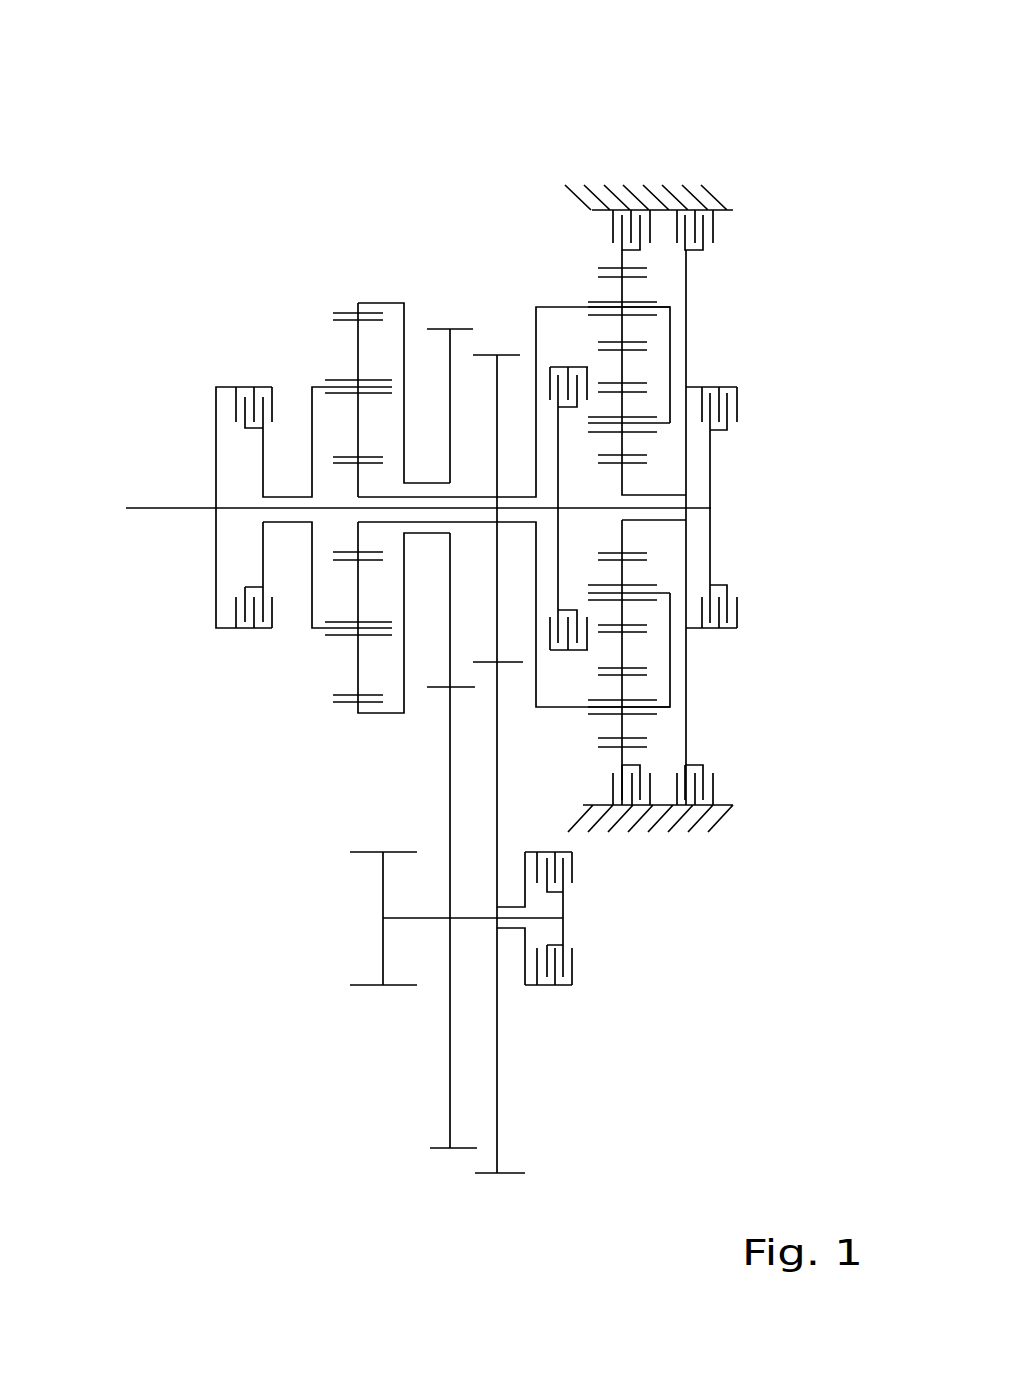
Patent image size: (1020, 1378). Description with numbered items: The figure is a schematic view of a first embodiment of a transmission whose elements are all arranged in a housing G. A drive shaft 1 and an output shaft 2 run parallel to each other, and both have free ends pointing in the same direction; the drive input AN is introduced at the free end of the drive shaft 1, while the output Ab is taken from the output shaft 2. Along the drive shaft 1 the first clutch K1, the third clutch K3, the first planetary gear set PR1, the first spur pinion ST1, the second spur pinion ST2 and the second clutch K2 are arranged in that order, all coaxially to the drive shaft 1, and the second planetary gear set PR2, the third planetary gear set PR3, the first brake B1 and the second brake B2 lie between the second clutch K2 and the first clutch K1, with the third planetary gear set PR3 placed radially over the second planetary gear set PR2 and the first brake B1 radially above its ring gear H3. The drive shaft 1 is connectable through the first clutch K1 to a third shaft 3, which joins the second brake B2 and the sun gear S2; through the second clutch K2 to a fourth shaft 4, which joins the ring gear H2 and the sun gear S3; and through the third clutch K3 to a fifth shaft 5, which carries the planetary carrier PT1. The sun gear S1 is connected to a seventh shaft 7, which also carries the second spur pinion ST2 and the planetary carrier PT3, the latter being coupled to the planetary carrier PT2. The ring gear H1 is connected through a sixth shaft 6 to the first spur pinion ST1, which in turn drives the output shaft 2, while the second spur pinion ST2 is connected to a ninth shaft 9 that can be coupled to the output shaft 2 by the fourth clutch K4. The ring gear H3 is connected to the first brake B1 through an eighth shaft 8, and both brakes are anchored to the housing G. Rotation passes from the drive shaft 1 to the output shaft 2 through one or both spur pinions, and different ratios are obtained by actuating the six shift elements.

The drive shaft 1 is at (198, 512).
The output shaft 2 is at (428, 925).
The third shaft 3 is at (688, 434).
The fourth shaft 4 is at (603, 648).
The fifth shaft 5 is at (263, 455).
The sixth shaft 6 is at (381, 303).
The seventh shaft 7 is at (357, 537).
The eighth shaft 8 is at (625, 750).
The ninth shaft 9 is at (512, 898).
The drive input AN is at (168, 509).
The drive output Ab is at (380, 927).
The housing G is at (707, 200).
The first planetary gear set PR1 is at (223, 462).
The second planetary gear set PR2 is at (732, 378).
The third planetary gear set PR3 is at (708, 688).
The sun gear of the first planetary gear set S1 is at (333, 460).
The sun gear of the second planetary gear set S2 is at (645, 463).
The sun gear of the third planetary gear set S3 is at (638, 676).
The ring gear of the first planetary gear set H1 is at (347, 705).
The ring gear of the second planetary gear set H2 is at (633, 625).
The ring gear of the third planetary gear set H3 is at (605, 755).
The planetary carrier of the first planetary gear set PT1 is at (345, 637).
The planetary carrier of the second planetary gear set PT2 is at (732, 508).
The planetary carrier of the third planetary gear set PT3 is at (640, 714).
The first spur pinion ST1 is at (450, 290).
The second spur pinion ST2 is at (497, 316).
The first clutch K1 is at (748, 403).
The second clutch K2 is at (571, 665).
The third clutch K3 is at (253, 378).
The fourth clutch K4 is at (548, 996).
The first brake B1 is at (629, 172).
The second brake B2 is at (692, 172).